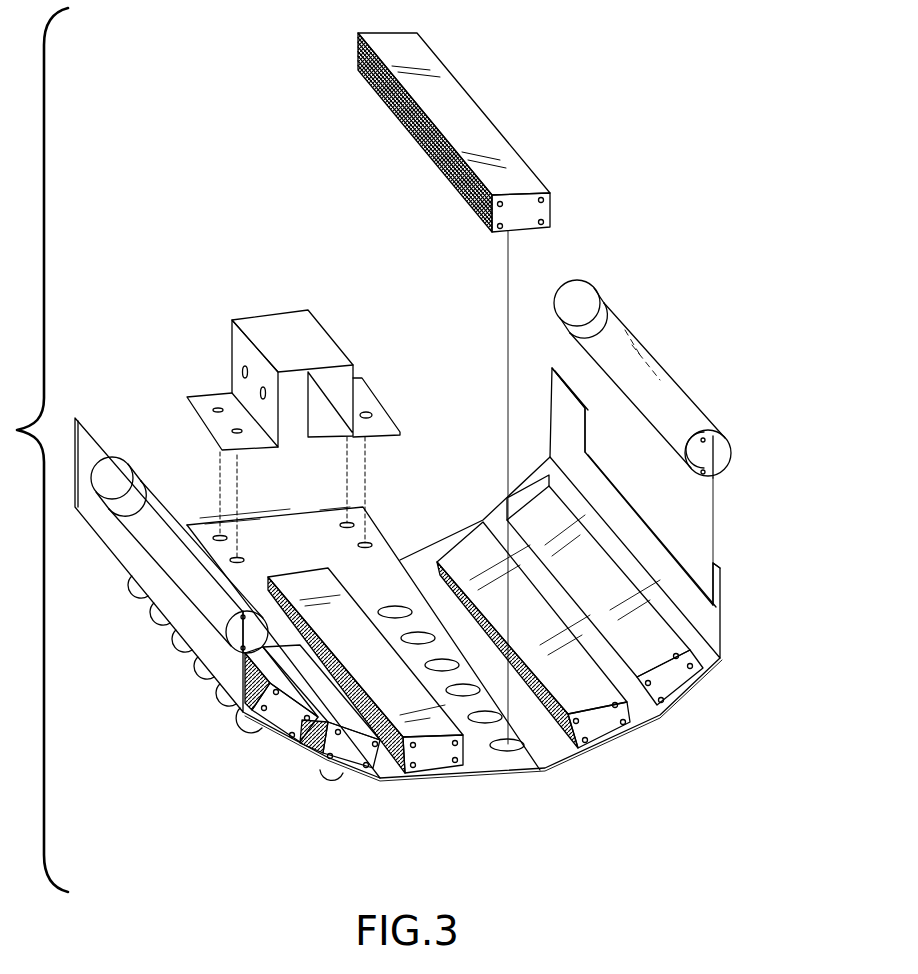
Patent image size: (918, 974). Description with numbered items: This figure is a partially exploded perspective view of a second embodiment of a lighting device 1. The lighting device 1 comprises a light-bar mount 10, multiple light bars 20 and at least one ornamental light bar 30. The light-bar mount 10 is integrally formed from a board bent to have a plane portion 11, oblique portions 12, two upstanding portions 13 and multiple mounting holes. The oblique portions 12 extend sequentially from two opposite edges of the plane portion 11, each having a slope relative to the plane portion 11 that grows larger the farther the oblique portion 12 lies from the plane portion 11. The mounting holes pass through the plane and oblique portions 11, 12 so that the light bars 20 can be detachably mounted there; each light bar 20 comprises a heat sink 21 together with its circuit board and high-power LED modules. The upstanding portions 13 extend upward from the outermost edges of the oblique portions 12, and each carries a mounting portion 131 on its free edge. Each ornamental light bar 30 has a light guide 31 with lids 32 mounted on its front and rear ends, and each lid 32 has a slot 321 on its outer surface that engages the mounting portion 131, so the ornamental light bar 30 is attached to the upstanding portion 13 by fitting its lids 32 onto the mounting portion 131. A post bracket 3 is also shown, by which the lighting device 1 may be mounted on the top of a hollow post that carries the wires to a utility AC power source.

The lighting device 1 is at (410, 376).
The light-bar mount 10 is at (431, 611).
The plane portion 11 is at (542, 755).
The oblique portion 12 is at (677, 692).
The upstanding portion 13 is at (620, 506).
The mounting portion 131 is at (555, 397).
The light bar 20 is at (454, 379).
The heat sink 21 is at (484, 128).
The post bracket 3 is at (293, 302).
The ornamental light bar 30 is at (423, 451).
The light guide 31 is at (655, 373).
The lid 32 is at (438, 451).
The slot 321 is at (715, 473).